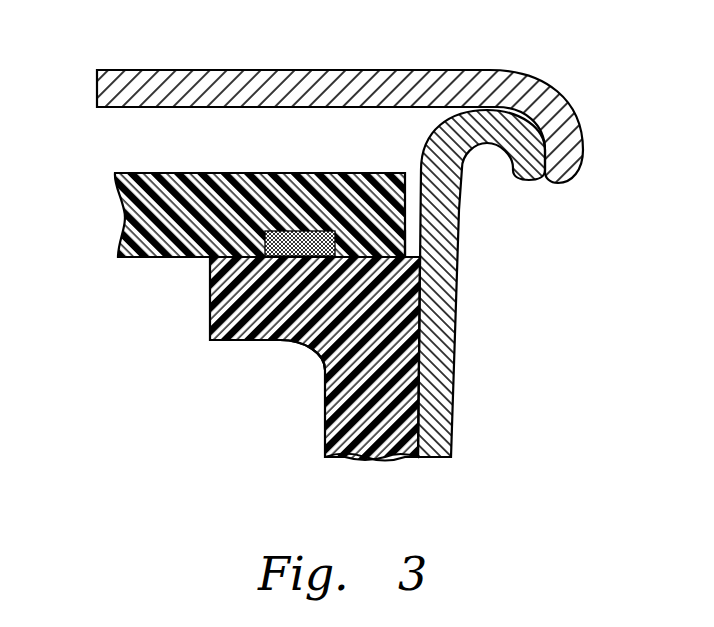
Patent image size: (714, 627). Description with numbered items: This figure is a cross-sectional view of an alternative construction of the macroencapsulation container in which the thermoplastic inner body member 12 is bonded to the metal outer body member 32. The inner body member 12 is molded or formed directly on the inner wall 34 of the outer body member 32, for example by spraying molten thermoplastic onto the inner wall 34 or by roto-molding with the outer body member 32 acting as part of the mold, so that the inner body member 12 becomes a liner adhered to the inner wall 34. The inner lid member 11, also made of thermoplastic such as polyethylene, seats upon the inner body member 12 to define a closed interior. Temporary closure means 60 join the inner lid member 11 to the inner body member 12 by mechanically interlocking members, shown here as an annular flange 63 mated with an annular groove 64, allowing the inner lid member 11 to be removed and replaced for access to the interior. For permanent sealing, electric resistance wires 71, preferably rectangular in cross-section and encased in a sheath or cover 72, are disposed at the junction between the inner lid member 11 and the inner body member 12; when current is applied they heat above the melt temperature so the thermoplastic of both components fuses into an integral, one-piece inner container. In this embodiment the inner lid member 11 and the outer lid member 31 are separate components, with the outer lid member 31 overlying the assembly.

The inner lid member 11 is at (137, 212).
The inner body member 12 is at (343, 431).
The outer lid member 31 is at (414, 71).
The outer body member 32 is at (454, 407).
The inner wall 34 is at (395, 417).
The temporary closure means 60 is at (421, 296).
The annular flange 63 is at (388, 245).
The annular groove 64 is at (291, 345).
The electric resistance wires 71 is at (228, 275).
The sheath or cover 72 is at (264, 232).